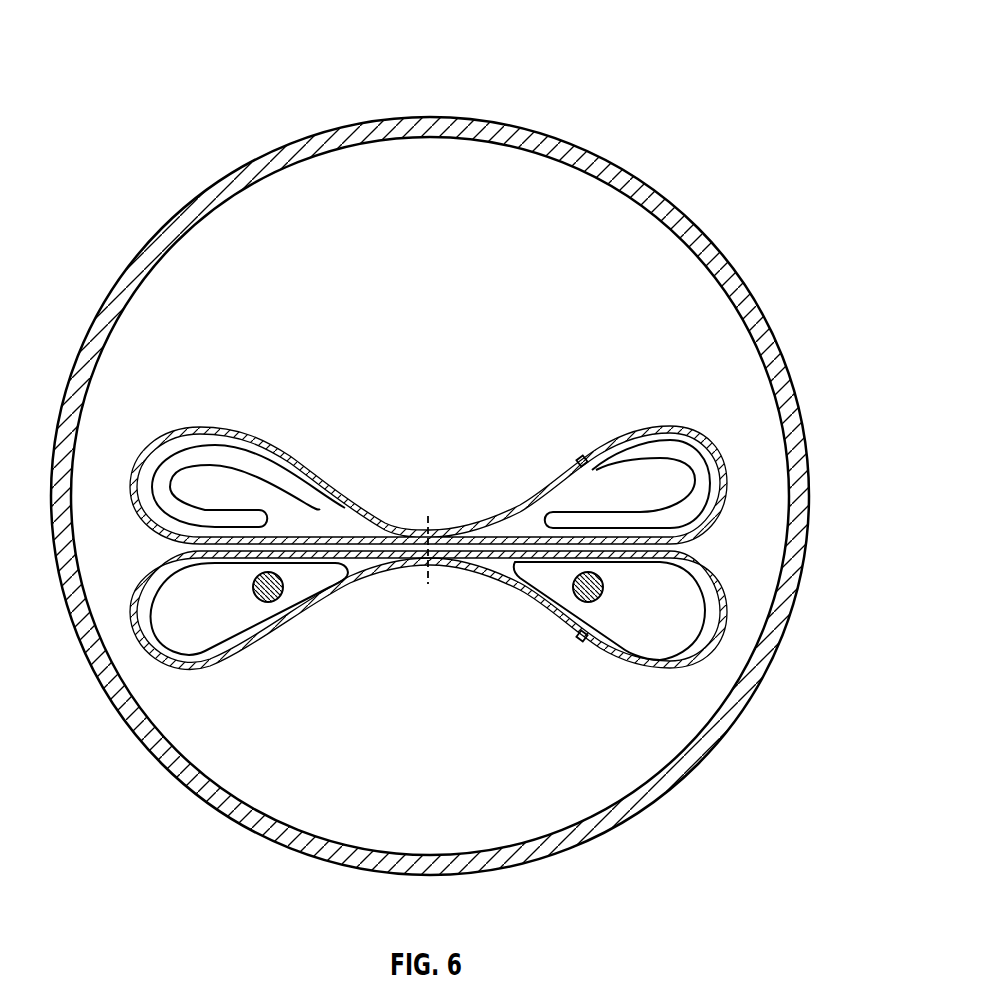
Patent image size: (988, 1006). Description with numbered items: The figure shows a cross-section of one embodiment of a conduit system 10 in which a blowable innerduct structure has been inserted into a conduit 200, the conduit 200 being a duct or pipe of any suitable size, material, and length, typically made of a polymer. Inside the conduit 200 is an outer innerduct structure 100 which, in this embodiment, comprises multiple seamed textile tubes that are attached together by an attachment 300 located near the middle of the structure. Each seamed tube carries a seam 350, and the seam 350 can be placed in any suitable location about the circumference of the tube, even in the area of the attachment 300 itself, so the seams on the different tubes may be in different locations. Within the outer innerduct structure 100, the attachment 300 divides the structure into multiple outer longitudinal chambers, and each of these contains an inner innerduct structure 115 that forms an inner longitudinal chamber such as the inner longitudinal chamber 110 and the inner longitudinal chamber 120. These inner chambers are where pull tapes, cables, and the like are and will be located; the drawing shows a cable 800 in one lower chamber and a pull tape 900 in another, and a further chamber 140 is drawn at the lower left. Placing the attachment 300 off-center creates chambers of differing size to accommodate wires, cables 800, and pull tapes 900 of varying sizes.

The conduit system 10 is at (127, 148).
The outer innerduct structure 100 is at (667, 428).
The inner longitudinal chamber 110 is at (626, 502).
The inner innerduct structure 115 is at (148, 482).
The inner longitudinal chamber 120 is at (185, 502).
The third chamber 140 is at (185, 621).
The conduit 200 is at (586, 141).
The attachment 300 is at (426, 567).
The seam 350 is at (584, 452).
The cable 800 is at (573, 591).
The pull tape 900 is at (286, 592).